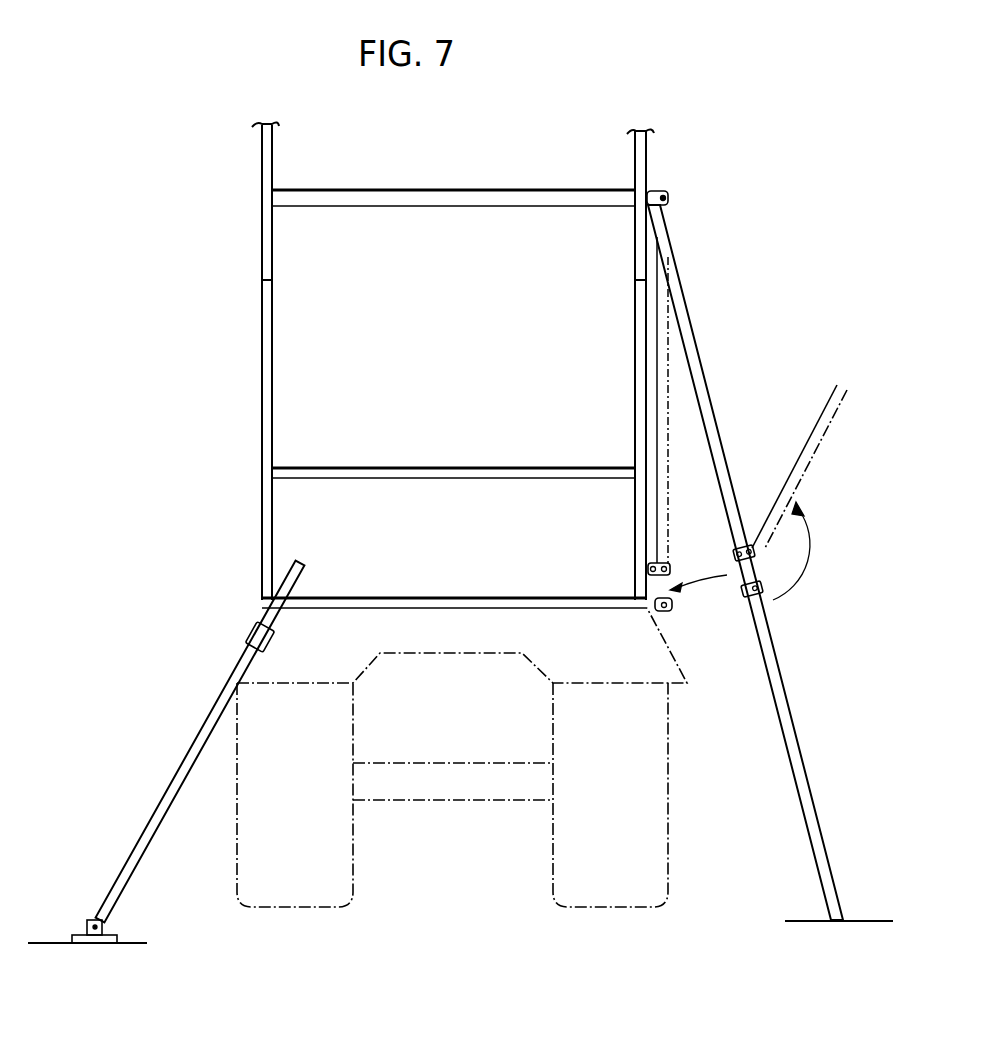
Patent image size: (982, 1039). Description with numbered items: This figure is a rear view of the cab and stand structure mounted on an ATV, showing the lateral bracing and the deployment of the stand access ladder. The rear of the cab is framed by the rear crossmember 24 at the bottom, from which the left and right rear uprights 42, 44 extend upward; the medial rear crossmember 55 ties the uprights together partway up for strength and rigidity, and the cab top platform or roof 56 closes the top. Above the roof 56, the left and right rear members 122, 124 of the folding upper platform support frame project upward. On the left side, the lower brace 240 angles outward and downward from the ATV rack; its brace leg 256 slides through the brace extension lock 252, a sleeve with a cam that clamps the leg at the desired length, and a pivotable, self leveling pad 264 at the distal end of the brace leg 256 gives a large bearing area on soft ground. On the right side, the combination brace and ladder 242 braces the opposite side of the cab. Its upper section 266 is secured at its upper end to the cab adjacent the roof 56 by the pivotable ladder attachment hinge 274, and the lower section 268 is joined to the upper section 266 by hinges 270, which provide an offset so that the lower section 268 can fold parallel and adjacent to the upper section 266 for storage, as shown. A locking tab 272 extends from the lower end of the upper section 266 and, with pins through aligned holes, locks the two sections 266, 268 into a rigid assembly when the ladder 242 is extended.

The rear crossmember 24 is at (485, 610).
The left rear upright 42 is at (262, 384).
The right rear upright 44 is at (635, 378).
The medial rear crossmember 55 is at (431, 470).
The cab top platform or roof 56 is at (448, 190).
The left rear member 122 is at (262, 158).
The right rear member 124 is at (635, 152).
The lower brace 240 is at (166, 752).
The combination brace and ladder 242 is at (786, 632).
The brace extension lock 252 is at (250, 628).
The brace leg 256 is at (167, 787).
The self leveling pad 264 is at (104, 936).
The upper section 266 is at (657, 357).
The lower section 268 is at (668, 437).
The hinges 270 is at (655, 562).
The locking tab 272 is at (672, 603).
The ladder attachment hinge 274 is at (668, 197).